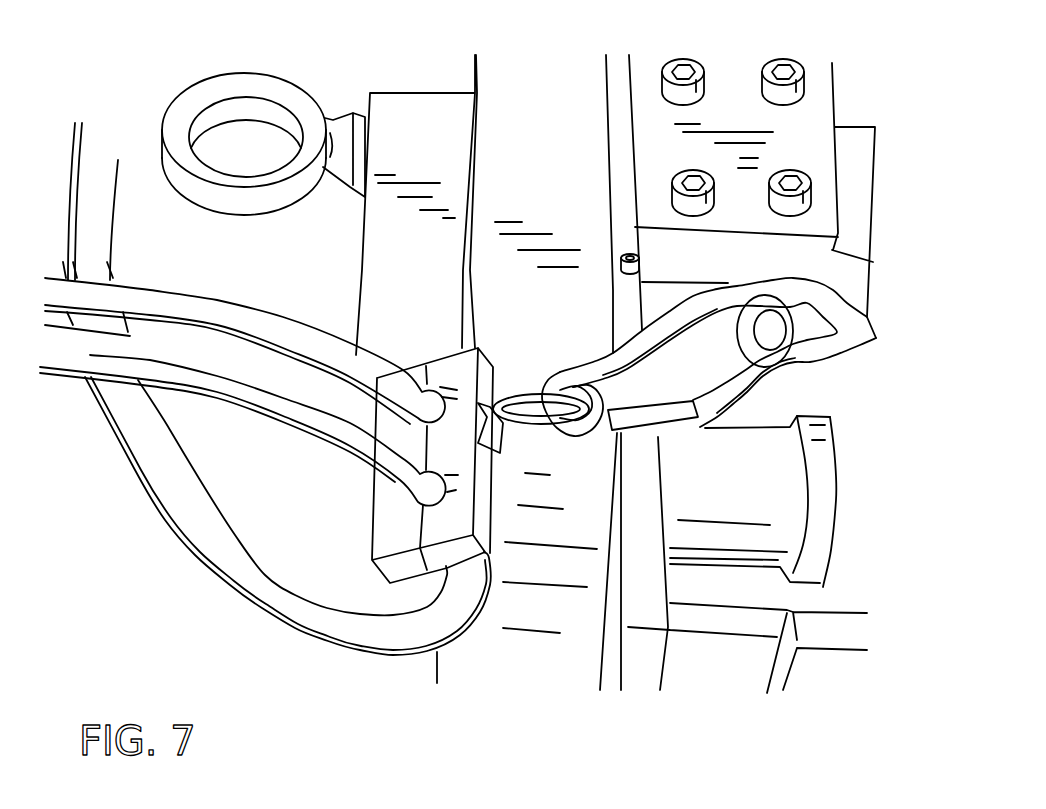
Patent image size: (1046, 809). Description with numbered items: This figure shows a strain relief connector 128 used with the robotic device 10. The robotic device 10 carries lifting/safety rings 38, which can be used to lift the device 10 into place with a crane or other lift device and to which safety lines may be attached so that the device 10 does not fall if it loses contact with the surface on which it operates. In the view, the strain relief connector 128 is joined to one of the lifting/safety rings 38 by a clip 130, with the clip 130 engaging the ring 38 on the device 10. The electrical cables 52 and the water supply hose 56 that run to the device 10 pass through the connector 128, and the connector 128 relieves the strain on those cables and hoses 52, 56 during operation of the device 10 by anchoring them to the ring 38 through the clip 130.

The robotic device 10 is at (559, 98).
The lifting/safety rings 38 is at (287, 80).
The electrical cables 52 is at (200, 307).
The water supply hose 56 is at (280, 603).
The strain relief connector 128 is at (385, 530).
The clip 130 is at (613, 357).